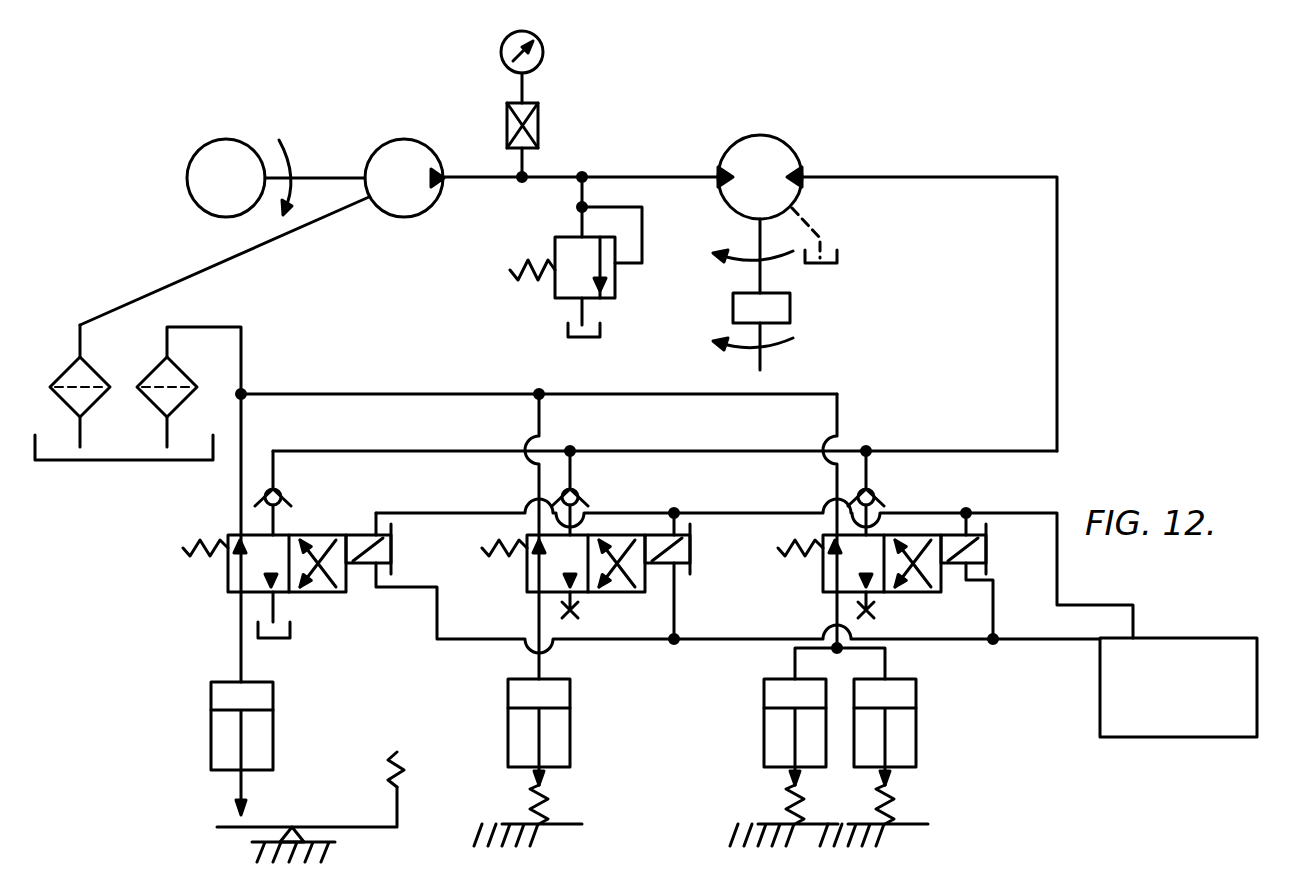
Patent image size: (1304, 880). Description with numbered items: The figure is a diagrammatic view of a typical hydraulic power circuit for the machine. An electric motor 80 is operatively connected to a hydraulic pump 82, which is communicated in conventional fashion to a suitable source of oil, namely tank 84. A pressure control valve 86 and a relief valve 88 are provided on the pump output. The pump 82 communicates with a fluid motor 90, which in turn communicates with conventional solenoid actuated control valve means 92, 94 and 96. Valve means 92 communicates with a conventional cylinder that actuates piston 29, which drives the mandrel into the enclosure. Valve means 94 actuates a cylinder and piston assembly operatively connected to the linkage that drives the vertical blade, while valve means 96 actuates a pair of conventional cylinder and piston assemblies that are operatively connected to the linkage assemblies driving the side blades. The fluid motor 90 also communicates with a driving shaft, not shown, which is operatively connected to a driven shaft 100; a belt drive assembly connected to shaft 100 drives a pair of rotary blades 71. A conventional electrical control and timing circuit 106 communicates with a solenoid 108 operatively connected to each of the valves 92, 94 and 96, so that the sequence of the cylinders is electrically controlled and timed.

The piston 29 is at (322, 708).
The rotary blades 71 is at (790, 308).
The electric motor 80 is at (205, 172).
The hydraulic pump 82 is at (393, 203).
The tank 84 is at (635, 318).
The pressure control valve 86 is at (505, 120).
The relief valve 88 is at (560, 246).
The fluid motor 90 is at (776, 160).
The solenoid actuated control valve means 92 is at (325, 595).
The solenoid actuated control valve means 94 is at (567, 546).
The solenoid actuated control valve means 96 is at (915, 593).
The driven shaft 100 is at (760, 234).
The electrical control and timing circuit 106 is at (1246, 657).
The solenoid 108 is at (386, 545).